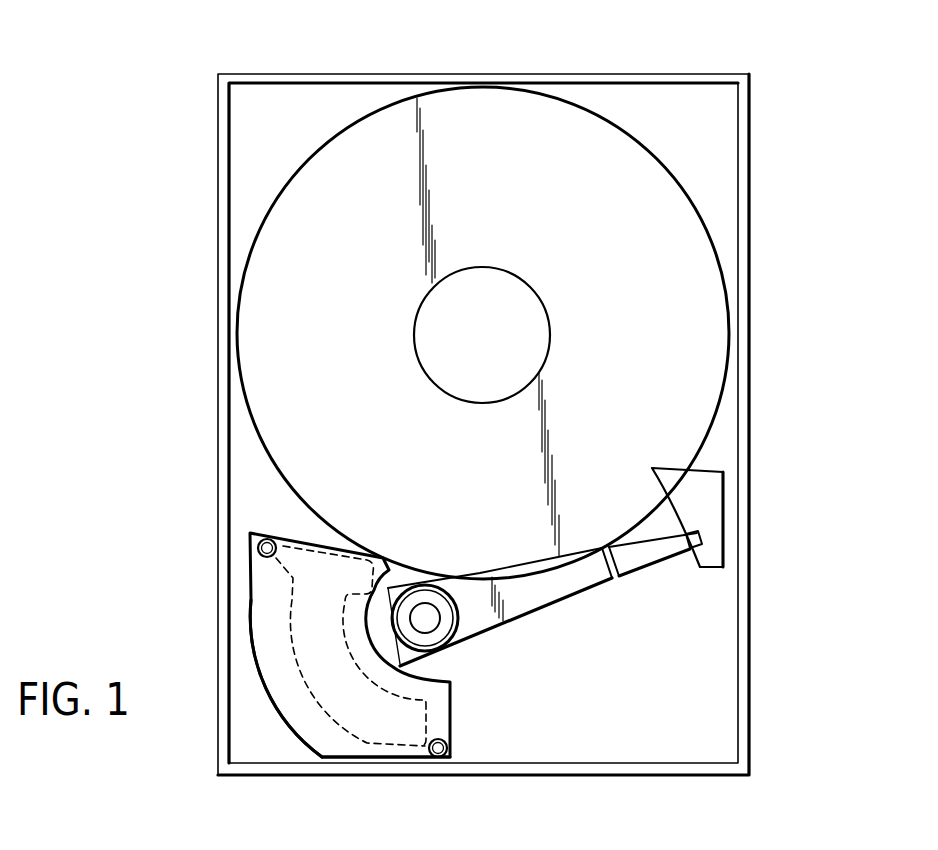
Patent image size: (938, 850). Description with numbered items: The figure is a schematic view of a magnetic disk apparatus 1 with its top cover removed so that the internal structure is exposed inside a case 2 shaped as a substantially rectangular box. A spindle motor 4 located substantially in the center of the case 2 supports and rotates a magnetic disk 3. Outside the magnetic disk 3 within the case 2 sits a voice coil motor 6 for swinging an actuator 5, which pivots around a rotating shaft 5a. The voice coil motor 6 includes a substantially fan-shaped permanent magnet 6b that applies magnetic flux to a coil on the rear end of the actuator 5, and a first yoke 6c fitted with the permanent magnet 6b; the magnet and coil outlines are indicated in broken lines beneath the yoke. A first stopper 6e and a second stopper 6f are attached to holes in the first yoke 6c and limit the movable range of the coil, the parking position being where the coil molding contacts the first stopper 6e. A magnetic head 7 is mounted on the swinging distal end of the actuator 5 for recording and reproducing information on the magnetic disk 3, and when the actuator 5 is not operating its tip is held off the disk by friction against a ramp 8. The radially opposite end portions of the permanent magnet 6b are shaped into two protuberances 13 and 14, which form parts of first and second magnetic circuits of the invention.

The magnetic disk apparatus 1 is at (772, 70).
The case 2 is at (755, 272).
The magnetic disk 3 is at (324, 143).
The spindle motor 4 is at (505, 292).
The actuator 5 is at (537, 602).
The rotating shaft 5a is at (424, 615).
The voice coil motor 6 is at (248, 600).
The permanent magnet 6b is at (363, 760).
The first yoke 6c is at (277, 707).
The first stopper 6e is at (257, 548).
The second stopper 6f is at (448, 748).
The magnetic head 7 is at (685, 553).
The ramp 8 is at (712, 515).
The protuberance 13 is at (285, 545).
The protuberance 14 is at (382, 552).